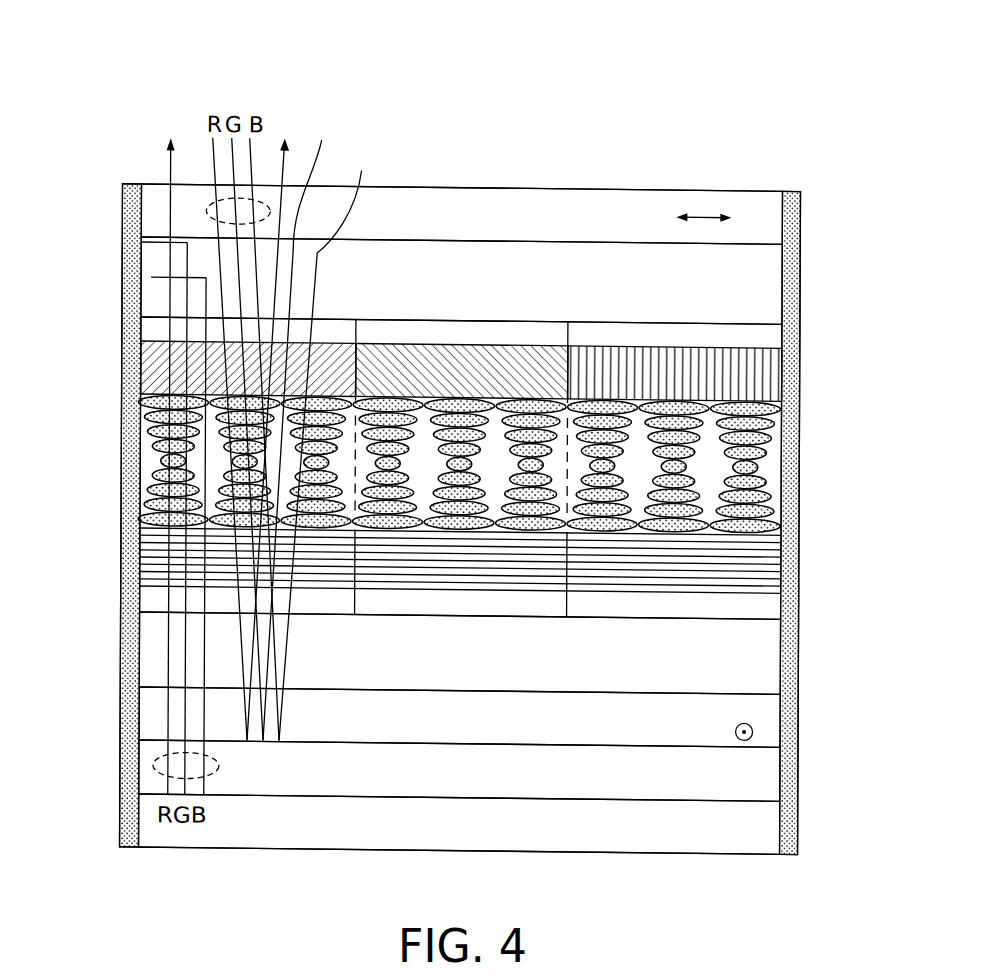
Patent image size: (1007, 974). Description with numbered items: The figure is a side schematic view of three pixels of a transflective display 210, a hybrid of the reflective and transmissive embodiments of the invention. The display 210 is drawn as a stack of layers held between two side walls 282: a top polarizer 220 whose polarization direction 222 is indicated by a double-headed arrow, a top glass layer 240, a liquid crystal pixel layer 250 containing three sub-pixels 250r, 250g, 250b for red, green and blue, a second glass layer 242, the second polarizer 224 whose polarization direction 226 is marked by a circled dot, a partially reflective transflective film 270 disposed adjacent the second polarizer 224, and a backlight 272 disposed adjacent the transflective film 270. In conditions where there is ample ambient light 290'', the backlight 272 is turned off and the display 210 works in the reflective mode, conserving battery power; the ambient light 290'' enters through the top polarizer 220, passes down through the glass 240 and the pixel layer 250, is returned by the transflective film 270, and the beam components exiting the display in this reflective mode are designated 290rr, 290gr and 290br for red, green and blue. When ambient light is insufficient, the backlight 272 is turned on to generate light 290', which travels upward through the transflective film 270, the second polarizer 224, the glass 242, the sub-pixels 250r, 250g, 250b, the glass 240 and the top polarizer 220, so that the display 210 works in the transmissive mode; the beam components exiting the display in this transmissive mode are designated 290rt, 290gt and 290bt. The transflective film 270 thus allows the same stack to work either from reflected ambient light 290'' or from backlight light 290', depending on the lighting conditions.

The display 210 is at (808, 102).
The top polarizer 220 is at (775, 210).
The polarization direction of top polarizer 222 is at (703, 208).
The second polarizer 224 is at (775, 705).
The polarization direction of bottom polarizer 226 is at (754, 725).
The top glass substrate 240 is at (775, 264).
The bottom glass substrate 242 is at (775, 635).
The liquid crystal pixel layer 250 is at (790, 317).
The red sub-pixel 250r is at (155, 310).
The green sub-pixel 250g is at (532, 316).
The blue sub-pixel 250b is at (732, 314).
The transflective film 270 is at (775, 774).
The backlight 272 is at (775, 817).
The side wall spacer 282 is at (133, 670).
The light 290' is at (139, 764).
The ambient light 290'' is at (153, 205).
The beam component exiting the display in the transmissive mode 290rt is at (168, 170).
The beam component exiting the display in the transmissive mode 290gt is at (140, 242).
The beam component exiting the display in the transmissive mode 290bt is at (150, 277).
The beam component exiting the display in the reflective mode 290rr is at (286, 163).
The beam component exiting the display in the reflective mode 290gr is at (314, 426).
The beam component exiting the display in the reflective mode 290br is at (339, 445).